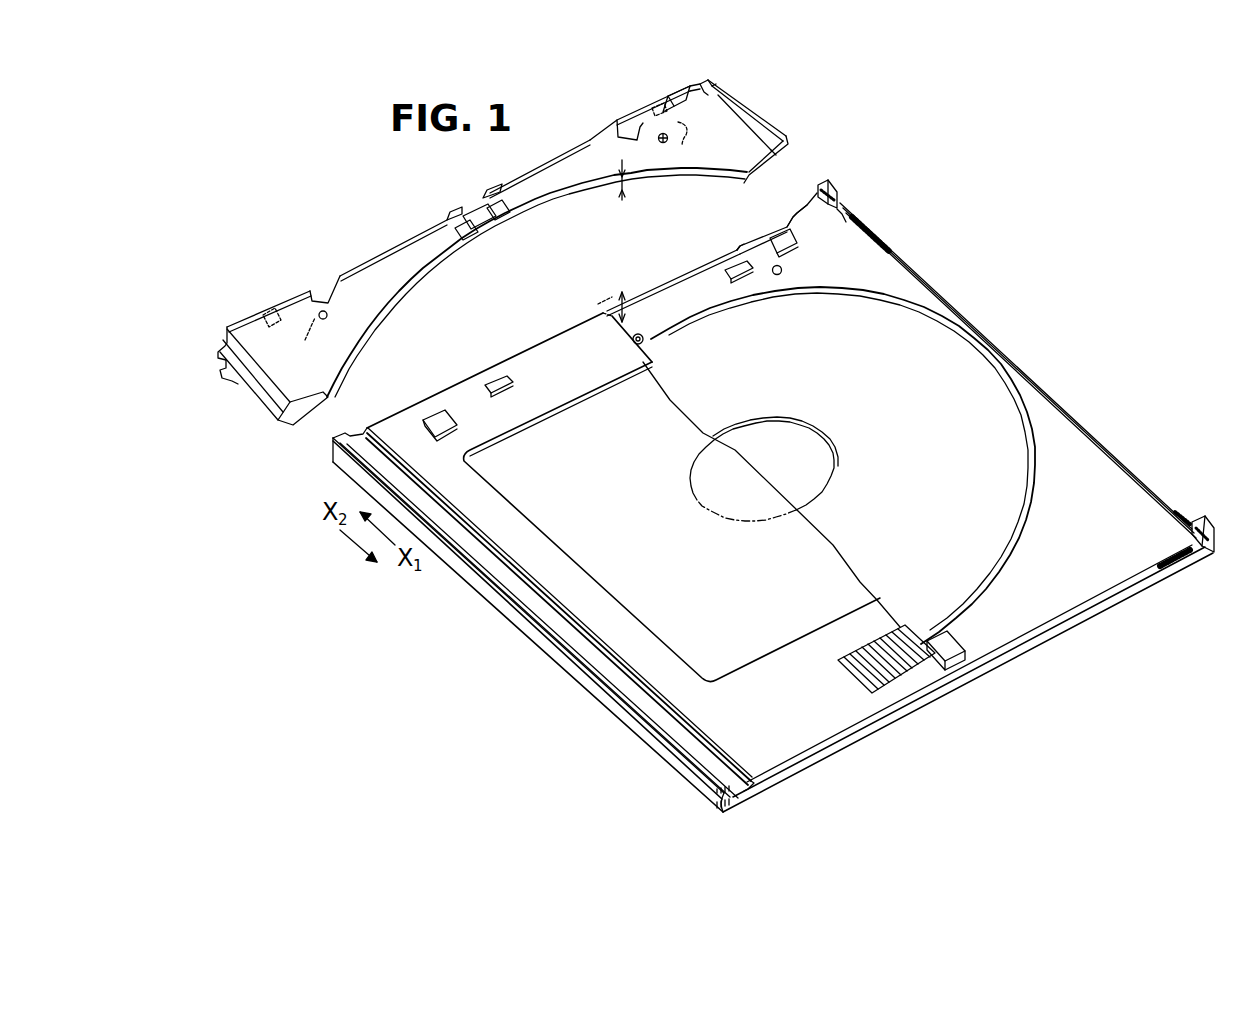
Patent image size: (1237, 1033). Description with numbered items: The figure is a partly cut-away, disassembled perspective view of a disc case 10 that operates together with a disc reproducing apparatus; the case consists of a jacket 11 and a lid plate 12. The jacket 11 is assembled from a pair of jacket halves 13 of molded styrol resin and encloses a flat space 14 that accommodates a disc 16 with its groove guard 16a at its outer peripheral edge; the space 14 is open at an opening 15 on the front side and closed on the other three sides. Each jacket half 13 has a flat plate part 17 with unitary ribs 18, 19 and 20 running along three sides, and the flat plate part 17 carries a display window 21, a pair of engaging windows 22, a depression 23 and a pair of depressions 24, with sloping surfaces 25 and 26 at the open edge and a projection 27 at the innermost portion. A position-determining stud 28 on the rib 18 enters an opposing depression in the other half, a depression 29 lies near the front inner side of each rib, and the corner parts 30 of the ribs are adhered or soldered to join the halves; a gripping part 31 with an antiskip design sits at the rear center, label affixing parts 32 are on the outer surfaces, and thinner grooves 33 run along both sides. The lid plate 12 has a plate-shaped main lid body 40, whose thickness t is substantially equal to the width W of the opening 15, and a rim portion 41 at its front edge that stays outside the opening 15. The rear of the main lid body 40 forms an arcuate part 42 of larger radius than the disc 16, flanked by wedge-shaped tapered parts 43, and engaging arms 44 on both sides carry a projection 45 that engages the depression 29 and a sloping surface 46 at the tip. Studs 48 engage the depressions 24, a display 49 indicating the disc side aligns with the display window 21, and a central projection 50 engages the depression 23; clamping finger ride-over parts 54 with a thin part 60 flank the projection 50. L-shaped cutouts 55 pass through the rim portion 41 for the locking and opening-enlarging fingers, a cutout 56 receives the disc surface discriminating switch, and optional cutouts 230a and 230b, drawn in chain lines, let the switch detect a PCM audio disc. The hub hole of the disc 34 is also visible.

The disc case 10 is at (864, 185).
The jacket 11 is at (563, 677).
The lid plate 12 is at (367, 243).
The jacket halves 13 is at (1137, 590).
The space 14 is at (1093, 450).
The opening 15 is at (611, 306).
The disc 16 is at (1033, 452).
The groove guard 16a is at (1036, 505).
The flat plate part 17 is at (467, 562).
The rib 18 is at (520, 613).
The rib 19 is at (532, 635).
The rib 20 is at (1067, 620).
The display window 21 is at (427, 417).
The engaging windows 22 is at (492, 380).
The depression 23 is at (646, 341).
The depressions 24 is at (780, 275).
The sloping surface 25 is at (720, 260).
The sloping surface 26 is at (787, 222).
The projection 27 is at (951, 647).
The stud 28 is at (831, 185).
The depression 29 is at (842, 218).
The corner parts 30 is at (870, 227).
The gripping part 31 is at (907, 673).
The label affixing parts 32 is at (571, 566).
The grooves 33 is at (717, 760).
The center hole 34 is at (711, 512).
The main lid body 40 is at (573, 188).
The rim portion 41 is at (532, 169).
The arcuate part 42 is at (425, 273).
The tapered parts 43 is at (298, 426).
The engaging arms 44 is at (249, 395).
The projection 45 is at (223, 375).
The sloping surface 46 is at (220, 346).
The stud 48 is at (327, 316).
The display 49 is at (310, 328).
The projection 50 is at (466, 204).
The clamping finger ride-over parts 54 is at (447, 213).
The L-shaped cutouts 55 is at (333, 293).
The cutout 56 is at (667, 99).
The thin part 60 is at (500, 218).
The cutout 230a is at (262, 310).
The cutout 230b is at (650, 105).
The width of the opening W is at (628, 310).
The thickness of the main lid body t is at (628, 184).